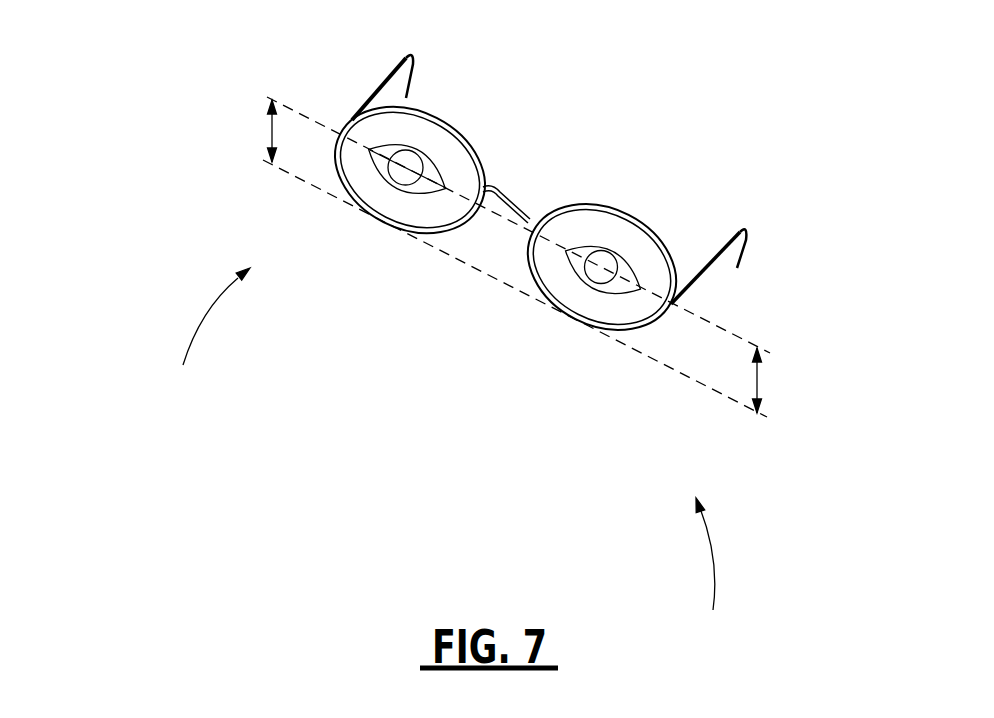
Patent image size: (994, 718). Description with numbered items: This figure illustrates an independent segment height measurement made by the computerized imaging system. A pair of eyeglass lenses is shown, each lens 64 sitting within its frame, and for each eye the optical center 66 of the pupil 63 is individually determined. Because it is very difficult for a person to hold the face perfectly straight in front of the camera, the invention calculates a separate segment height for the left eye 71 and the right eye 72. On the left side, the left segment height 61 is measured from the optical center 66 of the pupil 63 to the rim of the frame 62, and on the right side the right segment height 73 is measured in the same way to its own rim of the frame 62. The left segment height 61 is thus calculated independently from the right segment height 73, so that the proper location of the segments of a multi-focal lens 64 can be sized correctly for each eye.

The left segment height 61 is at (272, 130).
The rim of the frame 62 is at (393, 228).
The pupil 63 is at (415, 157).
The lens 64 is at (450, 163).
The optical center 66 is at (428, 180).
The left eye 71 is at (202, 340).
The right eye 72 is at (715, 584).
The right segment height 73 is at (757, 380).